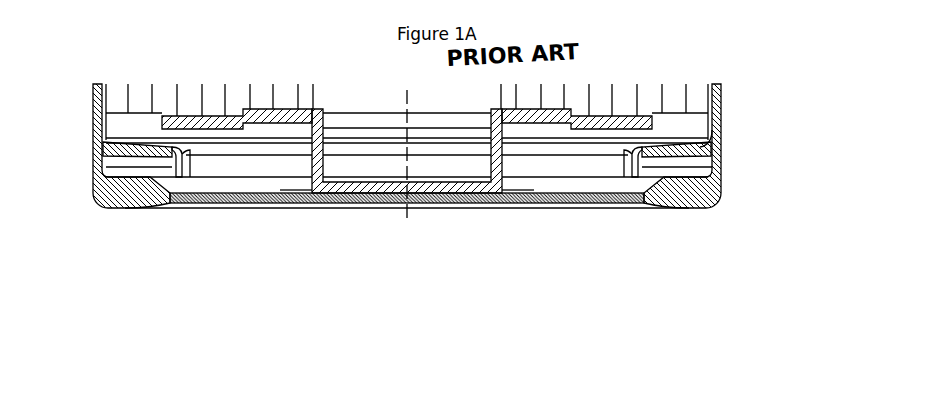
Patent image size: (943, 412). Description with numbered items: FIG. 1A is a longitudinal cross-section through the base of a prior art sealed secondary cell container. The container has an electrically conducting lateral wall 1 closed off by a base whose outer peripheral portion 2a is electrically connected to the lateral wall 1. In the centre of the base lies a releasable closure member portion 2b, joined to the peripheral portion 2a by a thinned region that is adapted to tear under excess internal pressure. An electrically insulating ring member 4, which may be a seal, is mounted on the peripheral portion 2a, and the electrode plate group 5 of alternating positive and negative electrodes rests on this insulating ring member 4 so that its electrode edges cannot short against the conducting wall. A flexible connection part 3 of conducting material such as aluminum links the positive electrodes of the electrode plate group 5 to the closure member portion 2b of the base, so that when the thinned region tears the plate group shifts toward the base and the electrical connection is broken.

The lateral wall 1 is at (92, 147).
The peripheral portion 2a is at (682, 203).
The closure member portion 2b is at (345, 195).
The connection part 3 is at (500, 148).
The insulating ring member 4 is at (175, 147).
The electrode plate group 5 is at (645, 93).